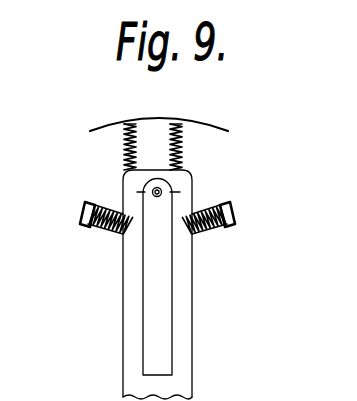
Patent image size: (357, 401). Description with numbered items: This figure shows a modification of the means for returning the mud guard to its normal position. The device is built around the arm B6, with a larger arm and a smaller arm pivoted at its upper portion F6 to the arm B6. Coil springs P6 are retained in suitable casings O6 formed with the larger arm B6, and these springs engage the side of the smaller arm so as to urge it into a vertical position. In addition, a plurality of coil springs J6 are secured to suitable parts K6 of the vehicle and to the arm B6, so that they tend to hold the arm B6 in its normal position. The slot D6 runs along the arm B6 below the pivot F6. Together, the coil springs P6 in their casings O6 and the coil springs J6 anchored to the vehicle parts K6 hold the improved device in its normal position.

The parts of the vehicle K6 is at (129, 123).
The coil springs J6 is at (136, 143).
The upper portion pivot F6 is at (160, 189).
The arm B6 is at (188, 293).
The slot D6 is at (165, 350).
The coil spring P6 is at (270, 205).
The casings O6 is at (245, 242).